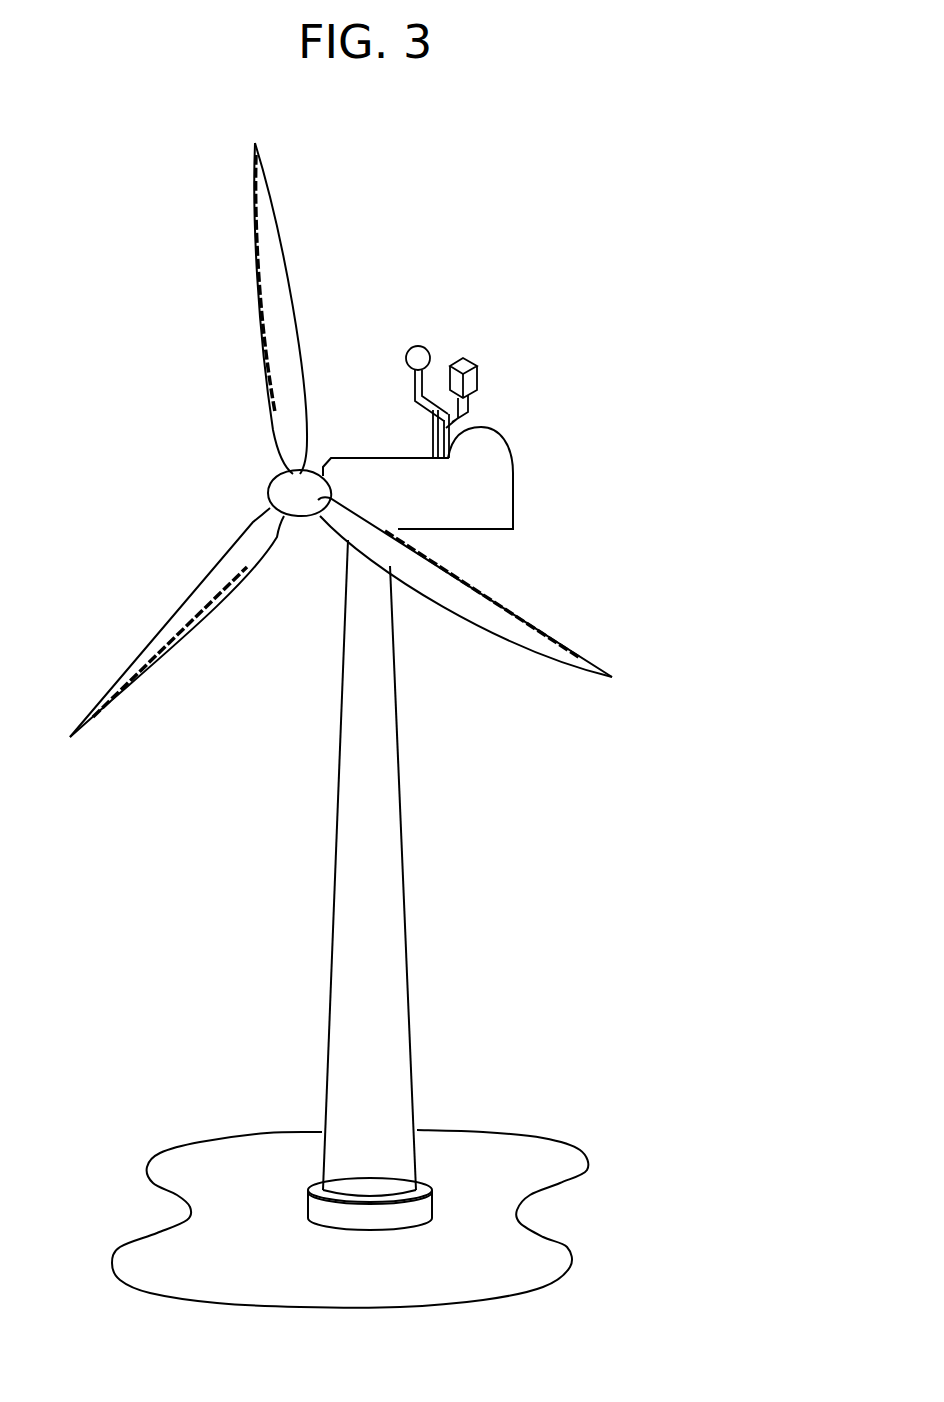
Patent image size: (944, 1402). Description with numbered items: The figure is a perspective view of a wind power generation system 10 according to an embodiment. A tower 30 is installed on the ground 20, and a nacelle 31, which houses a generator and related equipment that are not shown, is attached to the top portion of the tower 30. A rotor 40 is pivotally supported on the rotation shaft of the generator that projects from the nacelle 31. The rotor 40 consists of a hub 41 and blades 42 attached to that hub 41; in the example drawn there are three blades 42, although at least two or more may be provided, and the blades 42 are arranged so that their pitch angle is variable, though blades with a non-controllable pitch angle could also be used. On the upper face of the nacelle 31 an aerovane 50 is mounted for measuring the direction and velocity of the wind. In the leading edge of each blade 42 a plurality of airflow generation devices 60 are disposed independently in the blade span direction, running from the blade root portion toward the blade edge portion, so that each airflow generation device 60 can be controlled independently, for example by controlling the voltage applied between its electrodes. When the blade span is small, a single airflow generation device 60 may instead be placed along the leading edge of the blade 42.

The wind power generation system 10 is at (606, 163).
The ground 20 is at (483, 1143).
The tower 30 is at (387, 874).
The nacelle 31 is at (492, 500).
The rotor 40 is at (320, 290).
The hub 41 is at (313, 508).
The blade 42 is at (270, 210).
The aerovane 50 is at (430, 390).
The airflow generation device 60 is at (258, 346).